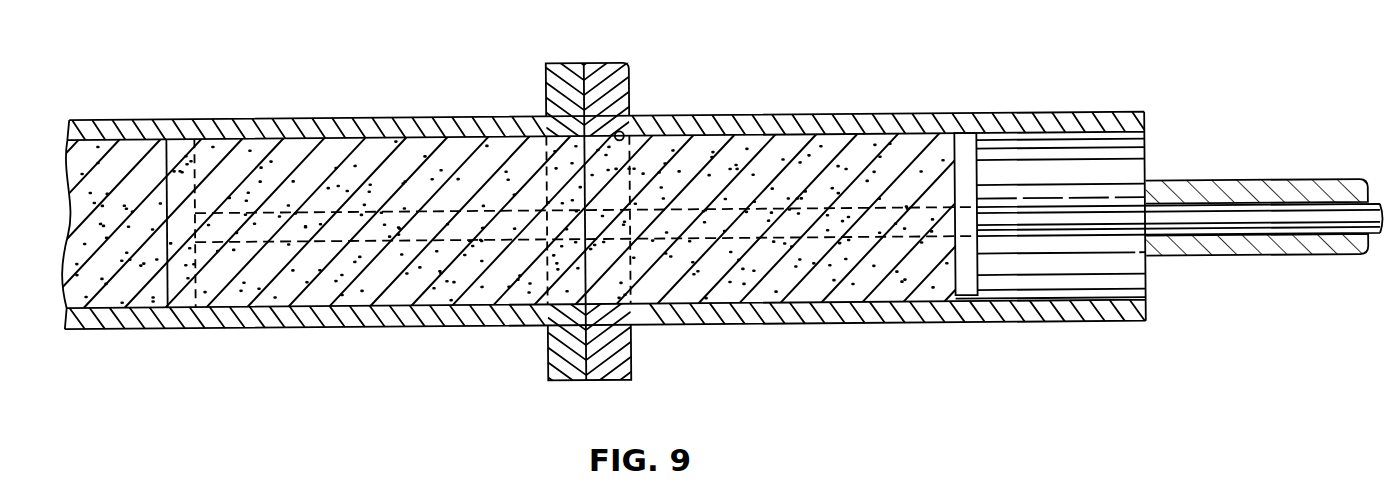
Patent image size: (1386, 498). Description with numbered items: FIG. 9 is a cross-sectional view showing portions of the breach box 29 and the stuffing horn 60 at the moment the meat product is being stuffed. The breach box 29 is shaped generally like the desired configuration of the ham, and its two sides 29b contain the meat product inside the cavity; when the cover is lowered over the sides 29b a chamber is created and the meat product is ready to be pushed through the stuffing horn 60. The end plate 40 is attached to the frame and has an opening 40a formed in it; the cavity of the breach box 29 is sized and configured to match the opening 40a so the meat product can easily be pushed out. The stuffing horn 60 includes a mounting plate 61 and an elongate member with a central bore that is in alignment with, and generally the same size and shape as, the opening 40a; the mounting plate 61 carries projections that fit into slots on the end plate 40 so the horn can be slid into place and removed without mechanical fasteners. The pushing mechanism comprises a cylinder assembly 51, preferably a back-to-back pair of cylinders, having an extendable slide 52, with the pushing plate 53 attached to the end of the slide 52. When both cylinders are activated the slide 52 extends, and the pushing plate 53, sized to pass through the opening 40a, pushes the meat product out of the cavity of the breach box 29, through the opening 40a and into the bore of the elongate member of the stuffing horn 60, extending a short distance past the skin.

The stuffing horn 60 is at (260, 116).
The sides of the breach box 29b is at (800, 116).
The pushing plate 53 is at (183, 137).
The end plate 40 is at (620, 63).
The mounting plate 61 is at (549, 62).
The opening 40a is at (633, 119).
The slide 52 is at (1062, 219).
The breach box 29 is at (1130, 267).
The cylinder assembly 51 is at (1195, 195).